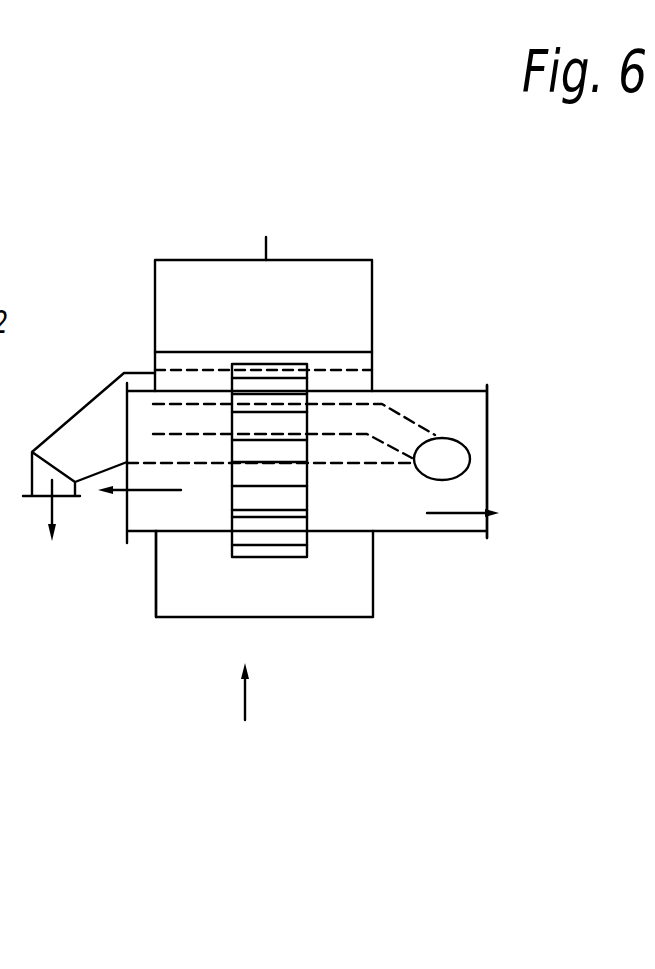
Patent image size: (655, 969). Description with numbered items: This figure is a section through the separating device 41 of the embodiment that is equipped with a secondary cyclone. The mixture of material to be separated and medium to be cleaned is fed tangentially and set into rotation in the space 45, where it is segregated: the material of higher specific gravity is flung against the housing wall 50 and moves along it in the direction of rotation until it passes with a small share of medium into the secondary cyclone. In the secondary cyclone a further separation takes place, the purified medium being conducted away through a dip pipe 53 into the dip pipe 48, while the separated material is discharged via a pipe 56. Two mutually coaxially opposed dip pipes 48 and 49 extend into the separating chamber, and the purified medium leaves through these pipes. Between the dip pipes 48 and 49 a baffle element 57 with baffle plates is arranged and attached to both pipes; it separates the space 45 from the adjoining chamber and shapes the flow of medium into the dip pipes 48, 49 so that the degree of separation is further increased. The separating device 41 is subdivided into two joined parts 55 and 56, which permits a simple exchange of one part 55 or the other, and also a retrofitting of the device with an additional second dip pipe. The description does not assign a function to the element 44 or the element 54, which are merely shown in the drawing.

The separating device 41 is at (245, 707).
The upper housing part 44 is at (307, 260).
The space 45 is at (332, 578).
The dip pipe 48 is at (450, 532).
The dip pipe 49 is at (187, 532).
The housing wall 50 is at (303, 617).
The dip pipe 53 is at (395, 433).
The bearing pin 54 is at (265, 255).
The joined part 55 is at (128, 279).
The pipe 56 is at (425, 296).
The baffle element 57 is at (273, 558).